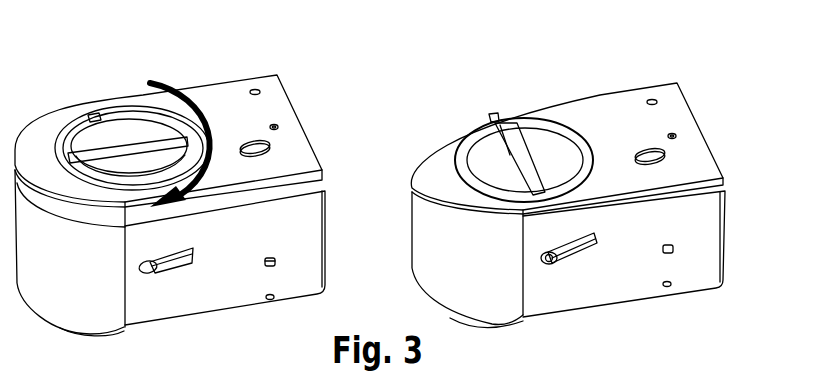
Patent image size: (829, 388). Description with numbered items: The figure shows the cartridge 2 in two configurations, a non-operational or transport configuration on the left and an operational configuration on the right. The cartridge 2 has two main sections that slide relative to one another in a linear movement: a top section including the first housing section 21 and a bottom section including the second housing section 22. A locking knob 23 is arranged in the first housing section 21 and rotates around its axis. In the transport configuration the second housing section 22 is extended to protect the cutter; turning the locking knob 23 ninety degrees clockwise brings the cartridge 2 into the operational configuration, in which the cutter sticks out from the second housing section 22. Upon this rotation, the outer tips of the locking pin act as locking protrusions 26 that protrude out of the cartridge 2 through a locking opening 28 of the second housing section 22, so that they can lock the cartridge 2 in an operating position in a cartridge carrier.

The cartridge 2 is at (106, 69).
The first housing section 21 is at (293, 130).
The second housing section 22 is at (322, 237).
The locking knob 23 is at (122, 152).
The locking protrusions 26 is at (553, 262).
The locking opening 28 is at (173, 258).